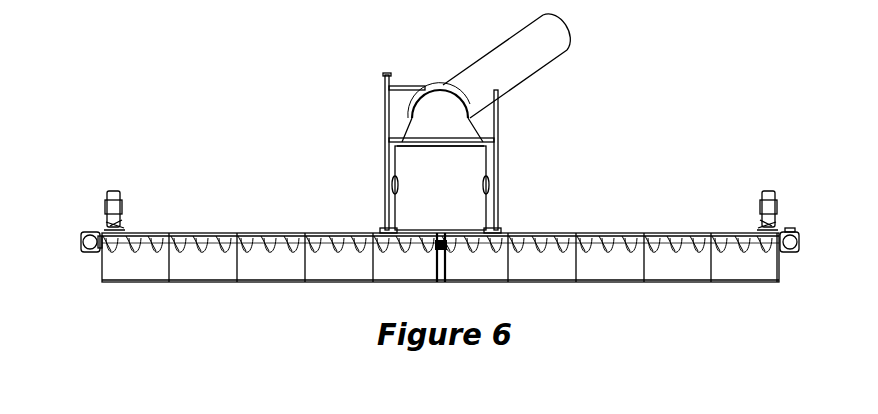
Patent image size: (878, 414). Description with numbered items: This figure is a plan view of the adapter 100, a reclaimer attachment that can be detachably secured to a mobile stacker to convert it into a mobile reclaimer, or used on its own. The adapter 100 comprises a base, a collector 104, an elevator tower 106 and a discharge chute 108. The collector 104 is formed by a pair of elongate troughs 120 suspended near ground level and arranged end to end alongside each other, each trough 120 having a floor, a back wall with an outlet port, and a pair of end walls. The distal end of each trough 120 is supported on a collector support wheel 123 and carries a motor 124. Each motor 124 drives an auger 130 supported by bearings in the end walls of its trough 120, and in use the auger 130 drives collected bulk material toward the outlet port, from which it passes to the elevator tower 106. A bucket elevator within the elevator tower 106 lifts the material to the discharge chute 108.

The adapter 100 is at (700, 106).
The collector 104 is at (155, 292).
The elevator tower 106 is at (376, 108).
The discharge chute 108 is at (552, 36).
The trough 120 is at (780, 276).
The collector support wheel 123 is at (114, 196).
The motor 124 is at (80, 228).
The auger 130 is at (272, 245).